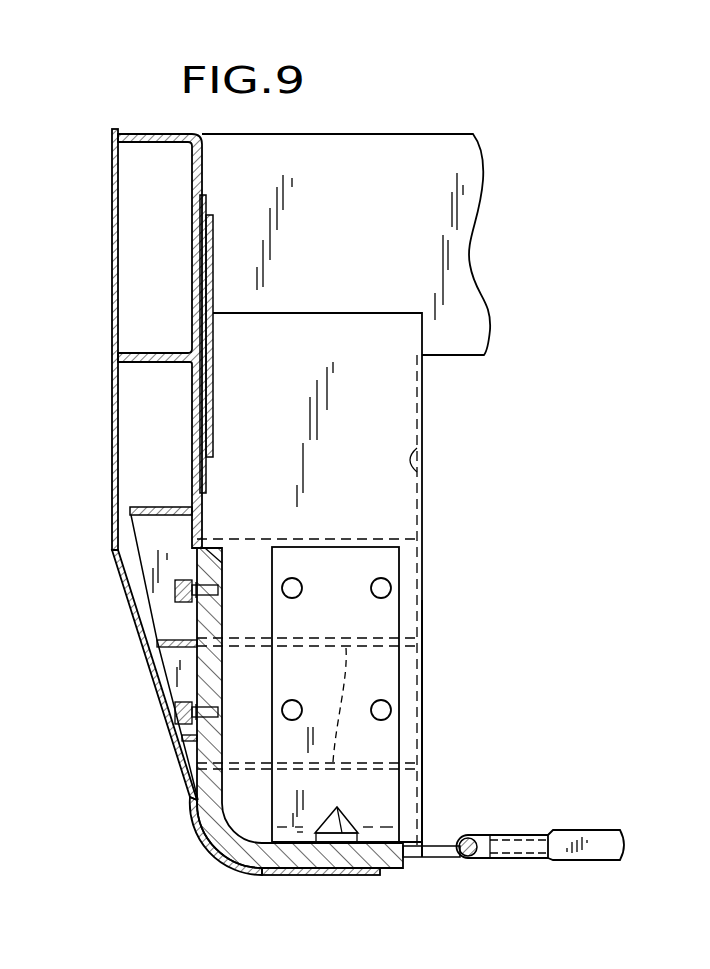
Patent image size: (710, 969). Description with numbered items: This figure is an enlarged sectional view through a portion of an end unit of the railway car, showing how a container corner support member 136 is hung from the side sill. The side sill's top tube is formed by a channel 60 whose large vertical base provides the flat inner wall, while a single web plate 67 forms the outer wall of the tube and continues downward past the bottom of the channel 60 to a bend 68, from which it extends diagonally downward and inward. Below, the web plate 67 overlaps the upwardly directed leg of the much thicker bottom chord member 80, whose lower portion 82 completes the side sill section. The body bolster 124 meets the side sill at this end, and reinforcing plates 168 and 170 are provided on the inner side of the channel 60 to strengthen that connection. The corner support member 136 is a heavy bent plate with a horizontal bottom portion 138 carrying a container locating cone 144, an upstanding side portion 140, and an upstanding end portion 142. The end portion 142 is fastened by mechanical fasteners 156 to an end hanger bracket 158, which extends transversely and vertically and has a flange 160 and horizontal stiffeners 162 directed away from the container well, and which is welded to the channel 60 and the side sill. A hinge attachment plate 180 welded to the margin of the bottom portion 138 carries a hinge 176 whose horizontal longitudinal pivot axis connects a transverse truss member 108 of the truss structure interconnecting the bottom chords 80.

The channel 60 is at (204, 168).
The web plate 67 is at (112, 446).
The bend 68 is at (112, 558).
The bottom chord member 80 is at (203, 858).
The bottom wall 82 is at (343, 872).
The transverse member 108 is at (597, 830).
The body bolster 124 is at (364, 225).
The container corner support member 136 is at (400, 743).
The horizontal bottom portion 138 is at (376, 840).
The side portion 140 is at (229, 566).
The end portion 142 is at (311, 561).
The container locating cone 144 is at (338, 819).
The mechanical fasteners 156 is at (243, 579).
The end hanger bracket 158 is at (381, 363).
The flange 160 is at (419, 455).
The horizontal stiffeners 162 is at (354, 539).
The reinforcing plate 168 is at (208, 474).
The reinforcing plate 170 is at (213, 402).
The hinge 176 is at (508, 835).
The hinge attachment plate 180 is at (427, 859).